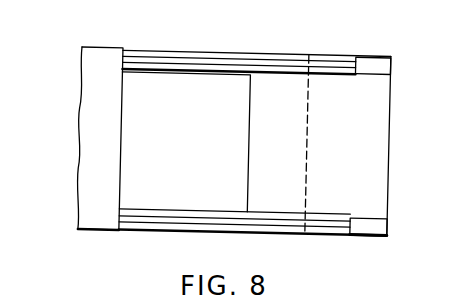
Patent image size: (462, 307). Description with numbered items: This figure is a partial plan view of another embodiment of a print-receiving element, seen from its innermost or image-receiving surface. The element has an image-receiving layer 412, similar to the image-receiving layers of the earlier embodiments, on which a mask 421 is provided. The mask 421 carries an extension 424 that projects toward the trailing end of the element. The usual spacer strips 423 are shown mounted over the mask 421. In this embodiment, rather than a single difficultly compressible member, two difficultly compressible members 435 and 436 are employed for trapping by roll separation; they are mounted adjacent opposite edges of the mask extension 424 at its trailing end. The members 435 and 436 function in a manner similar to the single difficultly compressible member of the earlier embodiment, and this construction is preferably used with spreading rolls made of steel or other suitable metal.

The image-receiving layer 412 is at (92, 127).
The mask 421 is at (276, 76).
The spacer strips 423 is at (170, 61).
The mask extension 424 is at (323, 203).
The difficultly compressible member 435 is at (388, 65).
The difficultly compressible member 436 is at (386, 229).